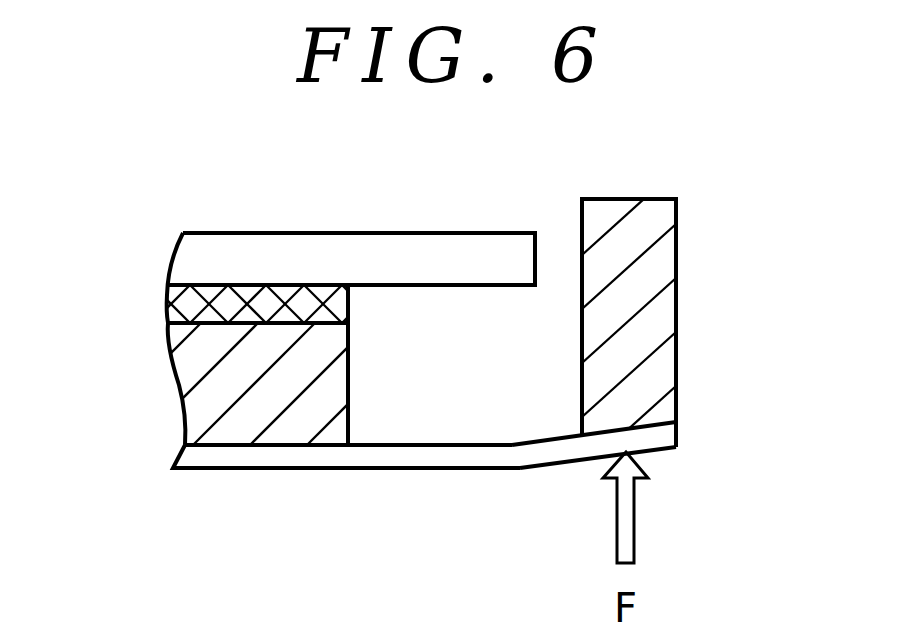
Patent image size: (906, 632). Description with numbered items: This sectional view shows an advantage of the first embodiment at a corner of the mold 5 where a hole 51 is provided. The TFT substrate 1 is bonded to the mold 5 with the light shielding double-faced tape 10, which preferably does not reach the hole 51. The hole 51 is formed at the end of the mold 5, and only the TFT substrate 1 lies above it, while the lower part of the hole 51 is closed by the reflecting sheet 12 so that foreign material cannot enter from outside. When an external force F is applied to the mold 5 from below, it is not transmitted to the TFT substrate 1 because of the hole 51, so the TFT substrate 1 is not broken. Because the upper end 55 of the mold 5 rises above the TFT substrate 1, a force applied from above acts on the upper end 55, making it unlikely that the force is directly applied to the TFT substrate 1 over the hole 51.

The TFT substrate 1 is at (272, 232).
The light shielding double-faced tape 10 is at (177, 313).
The mold 5 is at (197, 403).
The reflecting sheet 12 is at (310, 470).
The hole 51 is at (478, 420).
The upper end 55 is at (628, 199).